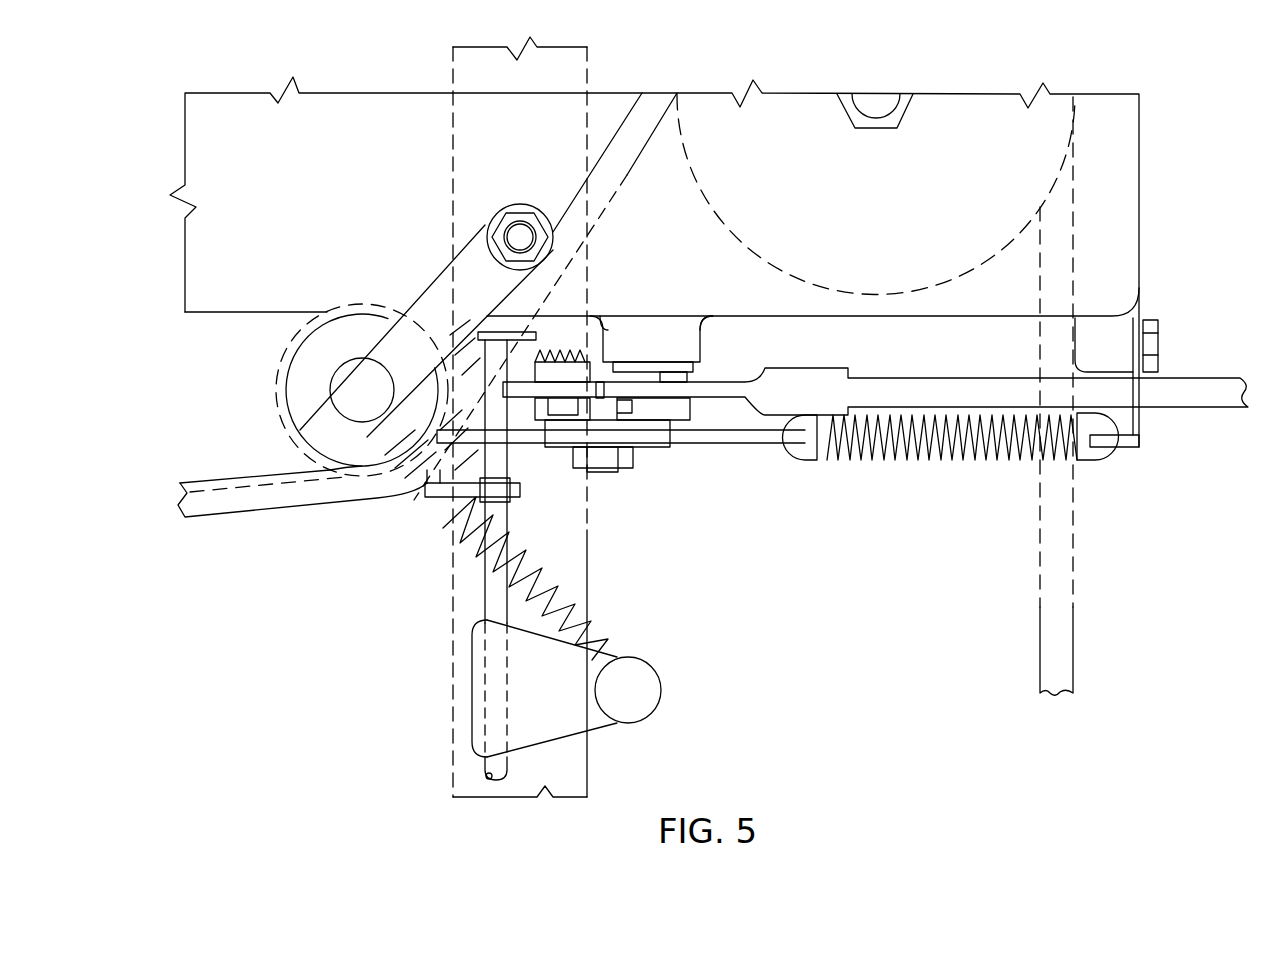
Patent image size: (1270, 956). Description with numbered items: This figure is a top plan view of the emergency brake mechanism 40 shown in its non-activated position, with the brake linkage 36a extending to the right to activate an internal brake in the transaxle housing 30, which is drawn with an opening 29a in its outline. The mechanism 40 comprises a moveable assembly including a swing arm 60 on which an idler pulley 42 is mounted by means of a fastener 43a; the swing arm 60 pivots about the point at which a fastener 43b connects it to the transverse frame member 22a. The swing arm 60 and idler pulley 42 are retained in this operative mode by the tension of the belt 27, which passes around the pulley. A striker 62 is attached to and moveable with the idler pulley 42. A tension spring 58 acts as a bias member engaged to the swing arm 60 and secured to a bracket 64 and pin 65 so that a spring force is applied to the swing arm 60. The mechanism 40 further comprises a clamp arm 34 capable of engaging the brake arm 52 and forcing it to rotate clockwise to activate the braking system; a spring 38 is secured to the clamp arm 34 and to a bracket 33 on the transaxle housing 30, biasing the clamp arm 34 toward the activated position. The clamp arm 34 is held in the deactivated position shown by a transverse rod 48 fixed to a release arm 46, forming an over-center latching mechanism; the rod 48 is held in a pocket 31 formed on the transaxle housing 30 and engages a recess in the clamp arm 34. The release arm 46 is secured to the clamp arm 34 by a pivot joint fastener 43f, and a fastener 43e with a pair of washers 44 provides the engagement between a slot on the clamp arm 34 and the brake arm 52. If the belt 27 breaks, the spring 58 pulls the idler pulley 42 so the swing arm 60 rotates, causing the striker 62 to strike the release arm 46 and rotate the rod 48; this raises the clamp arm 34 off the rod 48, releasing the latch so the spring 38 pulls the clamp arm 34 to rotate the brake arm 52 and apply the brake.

The transverse frame member 22a is at (455, 144).
The belt 27 is at (298, 506).
The opening 29a is at (724, 232).
The transaxle housing 30 is at (654, 262).
The pocket 31 is at (512, 328).
The bracket 33 is at (1115, 448).
The clamp arm 34 is at (712, 445).
The brake linkage 36a is at (968, 378).
The spring 38 is at (942, 465).
The emergency brake mechanism 40 is at (262, 655).
The idler pulley 42 is at (276, 385).
The fastener 43a is at (362, 390).
The fastener 43b is at (520, 235).
The fastener 43e is at (600, 413).
The pivot joint fastener 43f is at (434, 503).
The washers 44 is at (645, 442).
The release arm 46 is at (522, 492).
The transverse rod 48 is at (518, 455).
The brake arm 52 is at (602, 470).
The tension spring 58 is at (563, 572).
The swing arm 60 is at (488, 296).
The striker 62 is at (362, 390).
The bracket 64 is at (598, 727).
The pin 65 is at (628, 690).